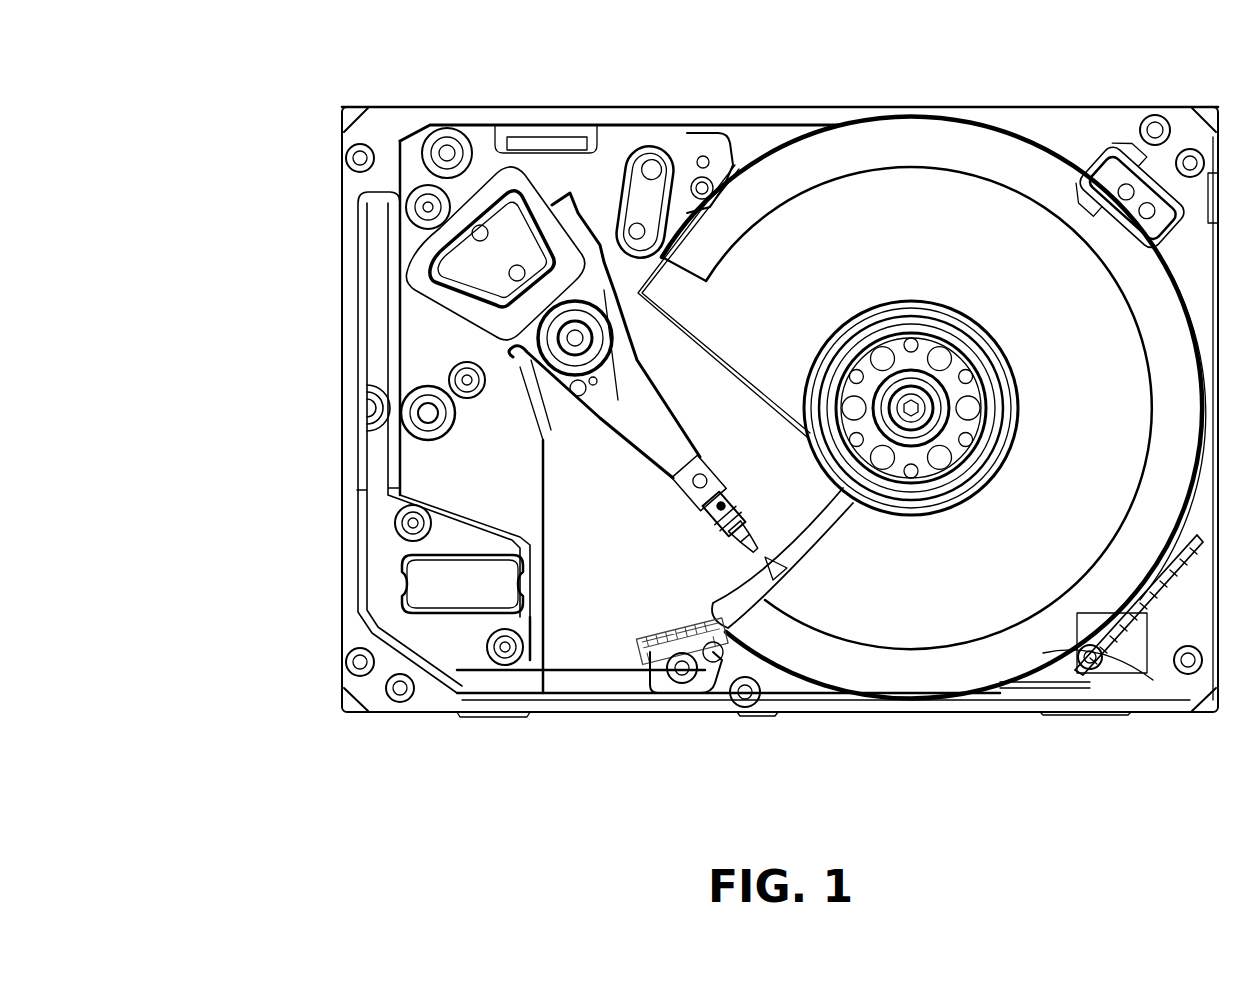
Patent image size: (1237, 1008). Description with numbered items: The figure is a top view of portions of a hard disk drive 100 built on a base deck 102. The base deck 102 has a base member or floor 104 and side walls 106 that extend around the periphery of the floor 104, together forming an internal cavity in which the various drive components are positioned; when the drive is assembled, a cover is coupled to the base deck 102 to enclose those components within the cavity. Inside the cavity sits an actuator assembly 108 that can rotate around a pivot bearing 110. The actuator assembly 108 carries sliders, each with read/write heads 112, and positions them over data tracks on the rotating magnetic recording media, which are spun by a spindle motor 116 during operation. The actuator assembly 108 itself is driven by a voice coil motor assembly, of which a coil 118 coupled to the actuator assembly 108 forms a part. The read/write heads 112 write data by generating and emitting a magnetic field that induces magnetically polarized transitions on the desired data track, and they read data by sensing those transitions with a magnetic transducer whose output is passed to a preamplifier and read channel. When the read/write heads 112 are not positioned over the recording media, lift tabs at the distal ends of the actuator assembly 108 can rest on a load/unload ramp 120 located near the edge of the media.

The hard disk drive 100 is at (300, 103).
The base deck 102 is at (612, 173).
The floor 104 is at (630, 540).
The side walls 106 is at (710, 117).
The actuator assembly 108 is at (650, 397).
The pivot bearing 110 is at (608, 340).
The read/write heads 112 is at (783, 567).
The spindle motor 116 is at (930, 360).
The coil 118 is at (473, 197).
The load/unload ramp 120 is at (648, 615).